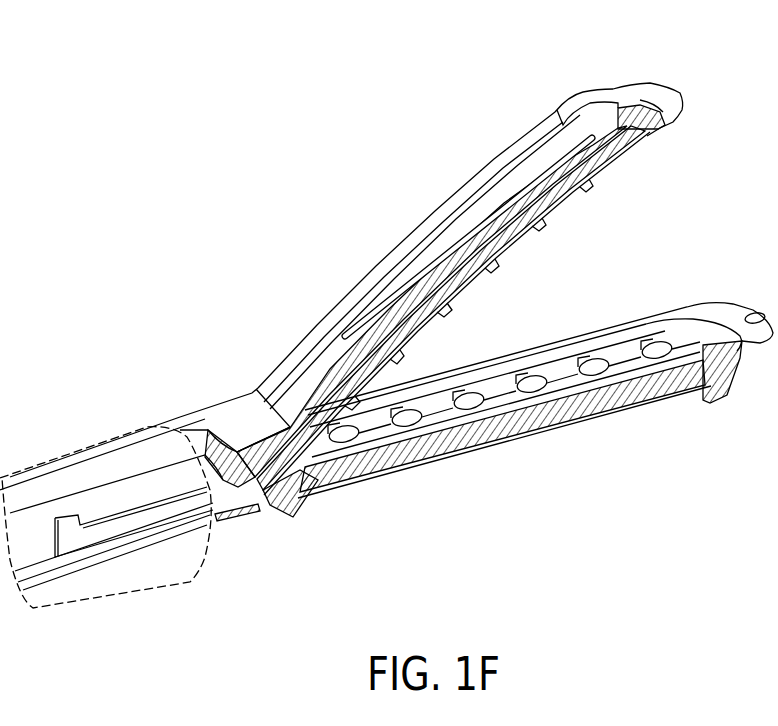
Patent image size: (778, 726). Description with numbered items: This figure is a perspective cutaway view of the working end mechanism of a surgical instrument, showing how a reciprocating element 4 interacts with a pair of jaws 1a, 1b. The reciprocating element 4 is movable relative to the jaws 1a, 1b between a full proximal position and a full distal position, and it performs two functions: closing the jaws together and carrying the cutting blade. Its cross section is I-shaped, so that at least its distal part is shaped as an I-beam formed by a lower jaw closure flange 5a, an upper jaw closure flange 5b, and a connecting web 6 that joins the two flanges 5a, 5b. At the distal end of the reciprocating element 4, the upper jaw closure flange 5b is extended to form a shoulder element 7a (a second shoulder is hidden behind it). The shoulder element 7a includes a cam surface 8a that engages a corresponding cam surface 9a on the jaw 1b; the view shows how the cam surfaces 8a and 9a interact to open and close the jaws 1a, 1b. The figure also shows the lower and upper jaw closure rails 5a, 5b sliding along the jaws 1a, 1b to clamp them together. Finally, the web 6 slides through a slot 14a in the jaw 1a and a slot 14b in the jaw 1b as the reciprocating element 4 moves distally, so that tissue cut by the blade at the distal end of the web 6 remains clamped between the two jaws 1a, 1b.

The jaw 1a is at (720, 303).
The jaw 1b is at (650, 82).
The reciprocating element 4 is at (90, 457).
The lower jaw closure flange 5a is at (180, 547).
The upper jaw closure flange 5b is at (57, 485).
The connecting web 6 is at (115, 497).
The shoulder element 7a is at (245, 423).
The cam surface 8a is at (253, 462).
The cam surface 9a is at (236, 452).
The slot 14a is at (563, 367).
The slot 14b is at (473, 223).